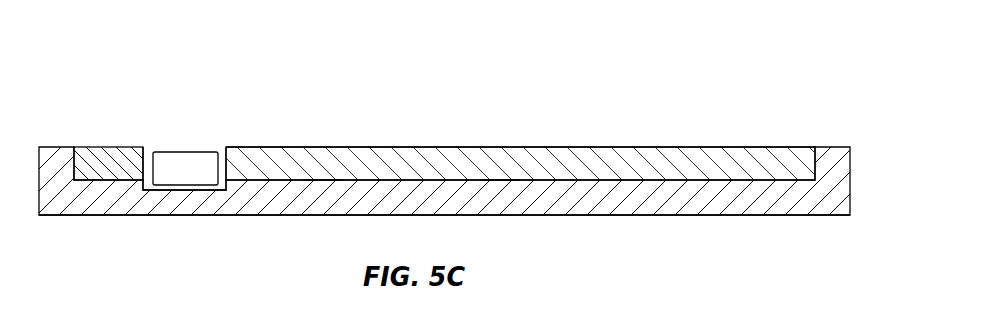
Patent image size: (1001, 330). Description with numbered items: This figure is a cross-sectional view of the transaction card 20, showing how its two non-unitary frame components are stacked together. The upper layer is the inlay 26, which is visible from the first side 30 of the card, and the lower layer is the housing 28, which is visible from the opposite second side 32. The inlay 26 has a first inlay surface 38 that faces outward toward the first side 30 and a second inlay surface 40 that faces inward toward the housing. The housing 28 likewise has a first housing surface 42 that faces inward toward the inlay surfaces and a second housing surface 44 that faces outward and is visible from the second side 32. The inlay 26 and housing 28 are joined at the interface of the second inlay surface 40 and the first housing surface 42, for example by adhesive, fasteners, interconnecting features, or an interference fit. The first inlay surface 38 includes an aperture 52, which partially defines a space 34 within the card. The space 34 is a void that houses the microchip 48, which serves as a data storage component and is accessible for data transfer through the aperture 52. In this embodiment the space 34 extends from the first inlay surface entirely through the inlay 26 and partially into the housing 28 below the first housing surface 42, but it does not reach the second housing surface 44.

The transaction card 20 is at (413, 40).
The inlay component 26 is at (697, 158).
The housing component 28 is at (673, 215).
The first side 30 is at (755, 100).
The second side 32 is at (755, 240).
The space 34 is at (141, 158).
The first inlay surface 38 is at (360, 147).
The second inlay surface 40 is at (500, 176).
The first housing surface 42 is at (323, 186).
The second housing surface 44 is at (185, 215).
The microchip 48 is at (185, 168).
The aperture 52 is at (222, 160).